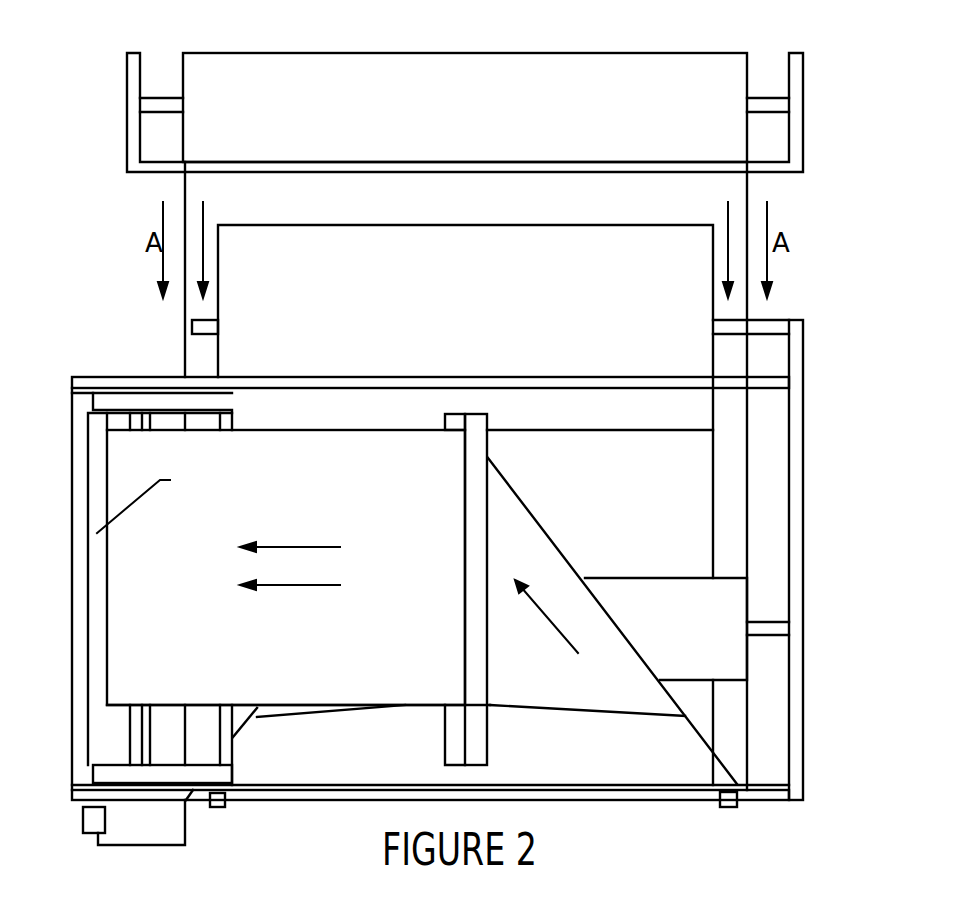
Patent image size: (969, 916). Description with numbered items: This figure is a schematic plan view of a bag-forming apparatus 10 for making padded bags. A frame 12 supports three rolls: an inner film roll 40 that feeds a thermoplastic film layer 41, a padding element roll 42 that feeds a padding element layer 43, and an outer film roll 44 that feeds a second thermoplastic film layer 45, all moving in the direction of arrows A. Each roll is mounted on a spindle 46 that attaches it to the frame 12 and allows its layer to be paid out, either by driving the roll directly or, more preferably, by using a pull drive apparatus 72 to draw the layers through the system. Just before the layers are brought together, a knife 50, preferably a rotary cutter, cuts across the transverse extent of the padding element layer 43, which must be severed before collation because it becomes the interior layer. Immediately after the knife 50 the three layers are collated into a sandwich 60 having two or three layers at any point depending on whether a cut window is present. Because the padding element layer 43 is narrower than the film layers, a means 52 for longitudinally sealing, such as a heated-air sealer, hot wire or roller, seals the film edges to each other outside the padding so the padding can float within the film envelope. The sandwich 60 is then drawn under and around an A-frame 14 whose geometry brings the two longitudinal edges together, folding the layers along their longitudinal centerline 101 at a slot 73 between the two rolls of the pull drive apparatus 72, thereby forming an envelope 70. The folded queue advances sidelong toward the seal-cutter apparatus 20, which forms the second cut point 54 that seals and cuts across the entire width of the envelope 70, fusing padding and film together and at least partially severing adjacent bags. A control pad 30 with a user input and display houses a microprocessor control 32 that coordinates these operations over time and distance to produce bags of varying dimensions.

The bag-forming apparatus 10 is at (88, 119).
The frame 12 is at (804, 517).
The A-frame 14 is at (628, 643).
The seal-cutter apparatus 20 is at (96, 452).
The control pad 30 is at (83, 815).
The microprocessor control 32 is at (98, 835).
The inner film roll 40 is at (694, 119).
The thermoplastic film layer 41 is at (479, 210).
The padding element roll 42 is at (679, 319).
The padding element layer 43 is at (669, 541).
The outer film roll 44 is at (738, 667).
The thermoplastic film layer 45 is at (730, 721).
The spindle 46 is at (767, 100).
The knife 50 is at (738, 773).
The means for longitudinally sealing 52 is at (225, 808).
The second cut point 54 is at (108, 437).
The sandwich 60 is at (603, 762).
The envelope 70 is at (404, 516).
The pull drive apparatus 72 is at (477, 533).
The slot 73 is at (465, 578).
The longitudinal centerline 101 is at (344, 422).